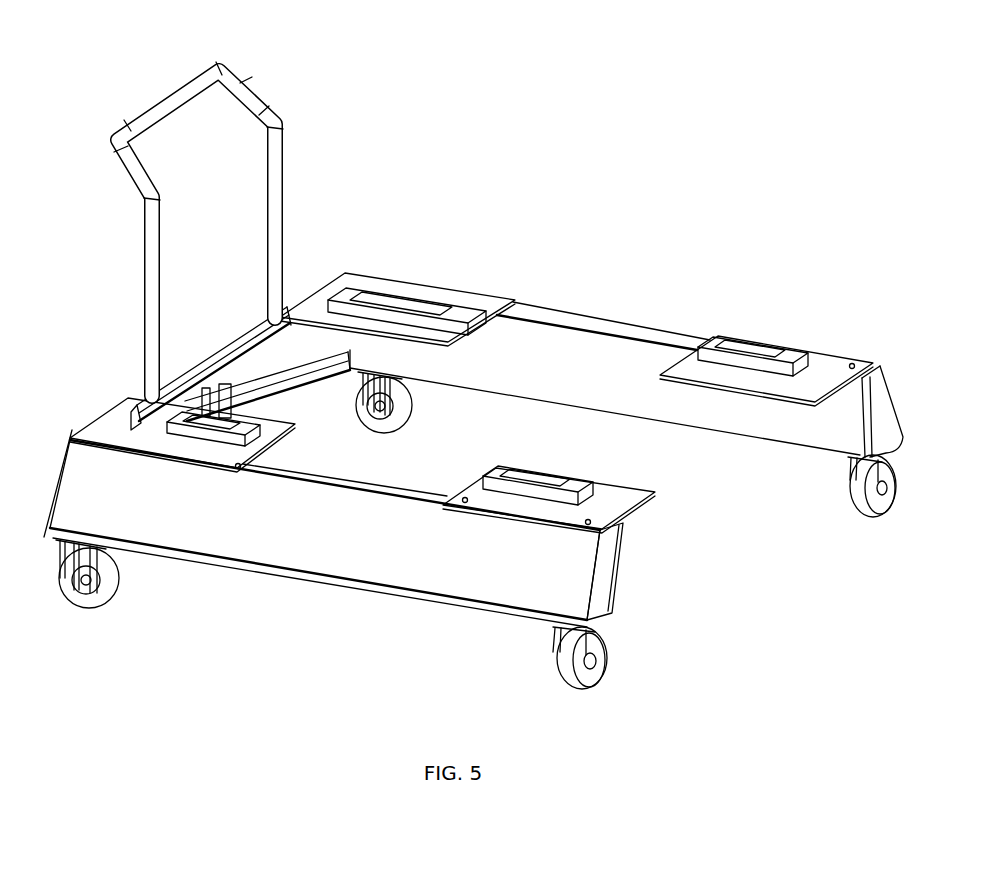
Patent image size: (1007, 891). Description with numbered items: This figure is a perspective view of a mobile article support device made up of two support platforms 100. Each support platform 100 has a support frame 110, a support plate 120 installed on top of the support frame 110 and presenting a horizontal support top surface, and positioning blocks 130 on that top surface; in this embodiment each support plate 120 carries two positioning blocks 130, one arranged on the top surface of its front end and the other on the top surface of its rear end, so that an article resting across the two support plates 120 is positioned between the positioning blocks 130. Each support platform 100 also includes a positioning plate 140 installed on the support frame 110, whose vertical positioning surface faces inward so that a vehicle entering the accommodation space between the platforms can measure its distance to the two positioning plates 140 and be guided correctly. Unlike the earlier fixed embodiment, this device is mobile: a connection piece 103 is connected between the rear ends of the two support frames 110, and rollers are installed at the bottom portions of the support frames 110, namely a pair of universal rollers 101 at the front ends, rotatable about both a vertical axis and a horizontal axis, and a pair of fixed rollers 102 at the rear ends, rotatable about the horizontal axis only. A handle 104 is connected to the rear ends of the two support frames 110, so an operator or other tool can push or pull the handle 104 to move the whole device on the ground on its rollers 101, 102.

The support platform 100 is at (488, 369).
The universal roller 101 is at (853, 488).
The fixed roller 102 is at (413, 403).
The connection piece 103 is at (240, 350).
The handle 104 is at (165, 97).
The support frame 110 is at (883, 413).
The support plate 120 is at (823, 365).
The positioning block 130 is at (757, 342).
The positioning plate 140 is at (732, 417).